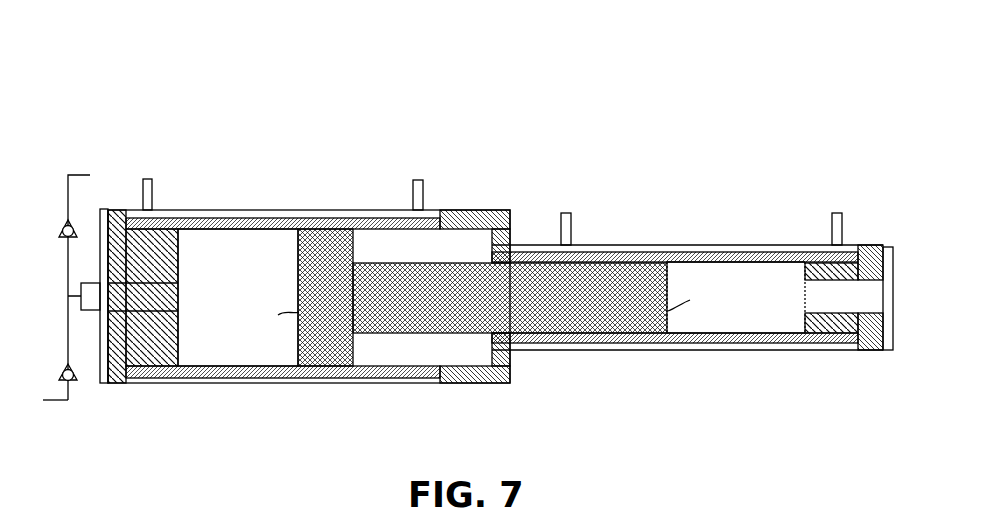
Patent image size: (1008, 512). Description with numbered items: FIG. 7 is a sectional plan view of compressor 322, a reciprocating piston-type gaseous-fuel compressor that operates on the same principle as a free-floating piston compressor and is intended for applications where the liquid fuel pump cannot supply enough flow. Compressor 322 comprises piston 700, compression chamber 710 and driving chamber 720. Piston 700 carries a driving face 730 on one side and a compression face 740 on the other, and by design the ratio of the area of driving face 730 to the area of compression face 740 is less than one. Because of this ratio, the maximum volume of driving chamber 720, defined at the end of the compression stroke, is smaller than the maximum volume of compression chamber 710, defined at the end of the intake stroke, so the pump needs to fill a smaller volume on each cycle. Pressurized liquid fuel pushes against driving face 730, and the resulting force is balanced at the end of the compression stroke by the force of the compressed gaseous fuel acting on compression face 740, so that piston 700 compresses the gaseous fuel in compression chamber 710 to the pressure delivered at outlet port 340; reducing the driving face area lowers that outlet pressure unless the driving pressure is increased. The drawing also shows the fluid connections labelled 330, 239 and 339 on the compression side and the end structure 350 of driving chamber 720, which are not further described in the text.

The compressor 322 is at (756, 85).
The fluid line 330 is at (90, 175).
The valve 239 is at (73, 230).
The valve 339 is at (74, 369).
The outlet port 340 is at (42, 401).
The compression chamber 710 is at (224, 262).
The compression face 740 is at (300, 288).
The piston 700 is at (478, 295).
The driving face 730 is at (668, 297).
The driving chamber 720 is at (742, 298).
The end port 350 is at (868, 298).